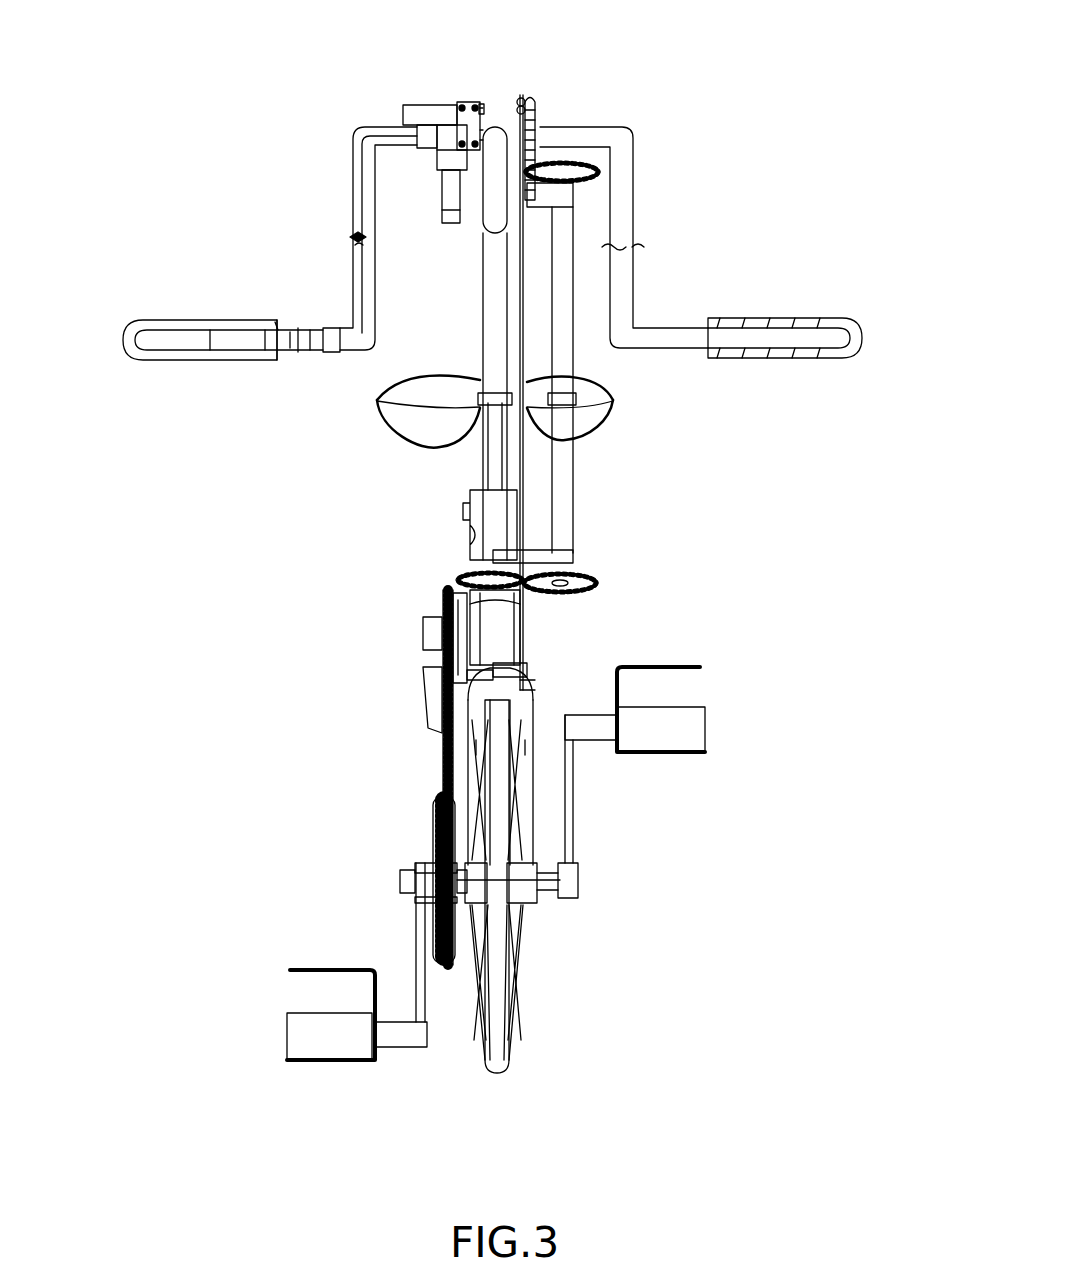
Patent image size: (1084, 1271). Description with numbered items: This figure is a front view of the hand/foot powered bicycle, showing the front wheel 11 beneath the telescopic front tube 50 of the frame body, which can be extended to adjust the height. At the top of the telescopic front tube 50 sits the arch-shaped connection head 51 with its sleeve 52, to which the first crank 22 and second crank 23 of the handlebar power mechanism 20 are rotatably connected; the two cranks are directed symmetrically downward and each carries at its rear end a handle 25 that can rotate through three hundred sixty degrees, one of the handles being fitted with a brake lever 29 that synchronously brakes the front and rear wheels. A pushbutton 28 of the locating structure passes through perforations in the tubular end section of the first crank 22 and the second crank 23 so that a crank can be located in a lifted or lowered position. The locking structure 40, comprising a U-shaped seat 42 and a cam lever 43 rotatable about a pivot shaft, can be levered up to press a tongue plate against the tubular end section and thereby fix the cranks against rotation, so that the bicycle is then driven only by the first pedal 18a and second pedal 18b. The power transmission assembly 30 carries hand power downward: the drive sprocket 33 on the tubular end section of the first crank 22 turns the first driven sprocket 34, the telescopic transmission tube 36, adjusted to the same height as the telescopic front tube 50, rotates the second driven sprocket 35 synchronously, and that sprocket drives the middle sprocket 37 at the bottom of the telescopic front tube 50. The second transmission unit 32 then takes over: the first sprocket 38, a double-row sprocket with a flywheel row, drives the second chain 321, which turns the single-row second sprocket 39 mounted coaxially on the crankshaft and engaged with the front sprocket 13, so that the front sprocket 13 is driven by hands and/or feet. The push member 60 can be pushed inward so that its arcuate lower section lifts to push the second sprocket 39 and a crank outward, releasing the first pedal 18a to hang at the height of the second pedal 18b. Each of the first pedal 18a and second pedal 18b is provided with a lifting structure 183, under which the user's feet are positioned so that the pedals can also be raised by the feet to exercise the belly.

The handlebar power mechanism 20 is at (662, 96).
The first crank 22 is at (625, 181).
The second crank 23 is at (362, 181).
The handle 25 is at (808, 320).
The pushbutton 28 is at (425, 118).
The brake lever 29 is at (153, 345).
The connection head 51 is at (498, 102).
The sleeve 52 is at (521, 100).
The drive sprocket 33 is at (532, 114).
The first driven sprocket 34 is at (582, 163).
The locking structure 40 is at (422, 207).
The U-shaped seat 42 is at (442, 160).
The cam lever 43 is at (447, 206).
The telescopic front tube 50 is at (466, 344).
The power transmission assembly 30 is at (540, 385).
The telescopic transmission tube 36 is at (590, 363).
The second transmission unit 32 is at (487, 736).
The middle sprocket 37 is at (470, 578).
The second driven sprocket 35 is at (573, 596).
The first sprocket 38 is at (443, 607).
The second chain 321 is at (440, 688).
The push member 60 is at (440, 736).
The front sprocket 13 is at (430, 806).
The second sprocket 39 is at (460, 945).
The front wheel 11 is at (497, 1062).
The lifting structure 183 is at (705, 668).
The first pedal 18a is at (697, 728).
The second pedal 18b is at (305, 1033).